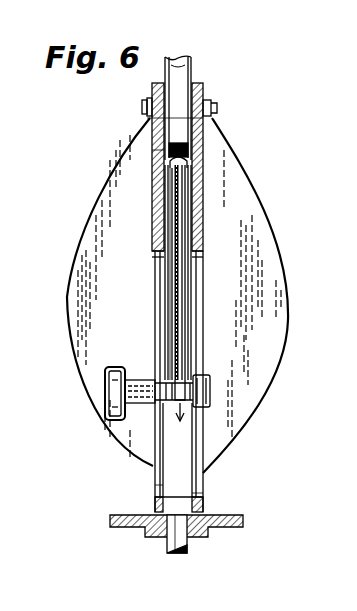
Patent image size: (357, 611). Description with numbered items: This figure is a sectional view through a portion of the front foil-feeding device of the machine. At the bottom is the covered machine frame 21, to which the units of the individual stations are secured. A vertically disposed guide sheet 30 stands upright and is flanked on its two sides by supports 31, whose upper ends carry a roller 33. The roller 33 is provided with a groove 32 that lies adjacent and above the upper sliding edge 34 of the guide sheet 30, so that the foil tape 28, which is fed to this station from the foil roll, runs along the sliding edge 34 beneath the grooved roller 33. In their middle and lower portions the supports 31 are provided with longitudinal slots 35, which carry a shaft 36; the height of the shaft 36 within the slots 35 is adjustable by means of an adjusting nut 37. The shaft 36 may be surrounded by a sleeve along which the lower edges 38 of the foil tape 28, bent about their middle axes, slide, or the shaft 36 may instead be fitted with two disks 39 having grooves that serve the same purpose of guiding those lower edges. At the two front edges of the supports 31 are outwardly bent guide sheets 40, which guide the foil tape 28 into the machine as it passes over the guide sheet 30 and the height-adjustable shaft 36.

The machine frame 21 is at (222, 515).
The foil tape 28 is at (172, 313).
The guide sheet 30 is at (178, 221).
The supports 31 is at (192, 494).
The groove 32 is at (177, 62).
The roller 33 is at (191, 72).
The upper sliding edge 34 is at (162, 154).
The longitudinal slots 35 is at (166, 283).
The shaft 36 is at (205, 380).
The adjusting nut 37 is at (112, 398).
The lower edges 38 is at (170, 376).
The disks 39 is at (179, 423).
The outwardly bent guide sheets 40 is at (100, 215).